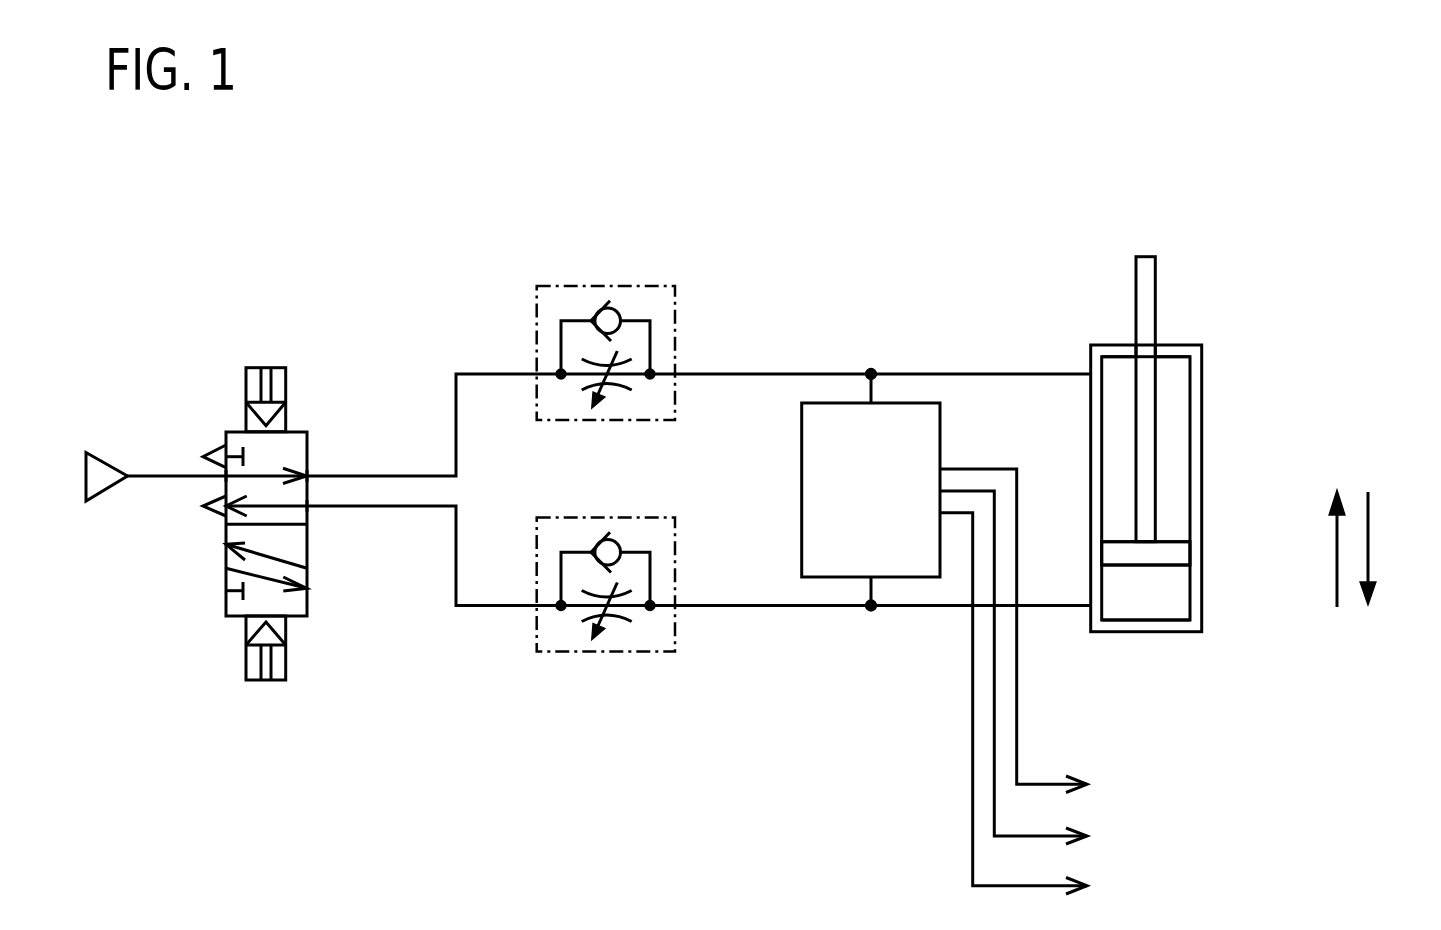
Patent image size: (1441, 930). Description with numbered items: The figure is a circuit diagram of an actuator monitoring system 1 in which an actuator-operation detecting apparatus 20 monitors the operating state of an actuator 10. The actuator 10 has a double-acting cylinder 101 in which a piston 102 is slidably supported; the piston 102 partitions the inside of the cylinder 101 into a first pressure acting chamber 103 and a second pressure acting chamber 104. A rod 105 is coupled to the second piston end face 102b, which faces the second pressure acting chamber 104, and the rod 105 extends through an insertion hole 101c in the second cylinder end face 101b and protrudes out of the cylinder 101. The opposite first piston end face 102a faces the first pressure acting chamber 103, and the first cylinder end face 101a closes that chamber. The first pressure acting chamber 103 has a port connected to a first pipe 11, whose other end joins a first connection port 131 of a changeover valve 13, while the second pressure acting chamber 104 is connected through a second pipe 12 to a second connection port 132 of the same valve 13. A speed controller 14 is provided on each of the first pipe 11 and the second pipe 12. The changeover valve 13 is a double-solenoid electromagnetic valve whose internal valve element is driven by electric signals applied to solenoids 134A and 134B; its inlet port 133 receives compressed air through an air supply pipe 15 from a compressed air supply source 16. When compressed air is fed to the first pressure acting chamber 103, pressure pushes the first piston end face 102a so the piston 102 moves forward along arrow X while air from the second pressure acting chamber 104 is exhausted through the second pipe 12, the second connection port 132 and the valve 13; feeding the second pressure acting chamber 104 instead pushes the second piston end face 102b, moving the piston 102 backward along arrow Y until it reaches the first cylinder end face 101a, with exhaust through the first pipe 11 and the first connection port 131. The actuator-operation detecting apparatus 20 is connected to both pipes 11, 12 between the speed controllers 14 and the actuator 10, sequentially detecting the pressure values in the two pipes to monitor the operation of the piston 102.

The cylinder control system 1 is at (230, 205).
The actuator 10 is at (1215, 469).
The first pipe 11 is at (797, 606).
The second pipe 12 is at (790, 374).
The changeover valve 13 is at (266, 512).
The speed controller 14 is at (637, 285).
The air supply pipe 15 is at (150, 476).
The compressed air supply source 16 is at (88, 452).
The actuator-operation detecting apparatus 20 is at (890, 500).
The double-acting cylinder 101 is at (1195, 530).
The first cylinder end face 101a is at (1118, 620).
The second cylinder end face 101b is at (1168, 357).
The insertion hole 101c is at (1142, 350).
The piston 102 is at (1177, 555).
The first piston end face 102a is at (1158, 568).
The second piston end face 102b is at (1168, 533).
The first pressure acting chamber 103 is at (1158, 607).
The second pressure acting chamber 104 is at (1168, 467).
The rod 105 is at (1145, 302).
The first connection port 131 is at (309, 506).
The second connection port 132 is at (309, 468).
The inlet port 133 is at (217, 478).
The solenoid 134A is at (286, 680).
The solenoid 134B is at (285, 367).